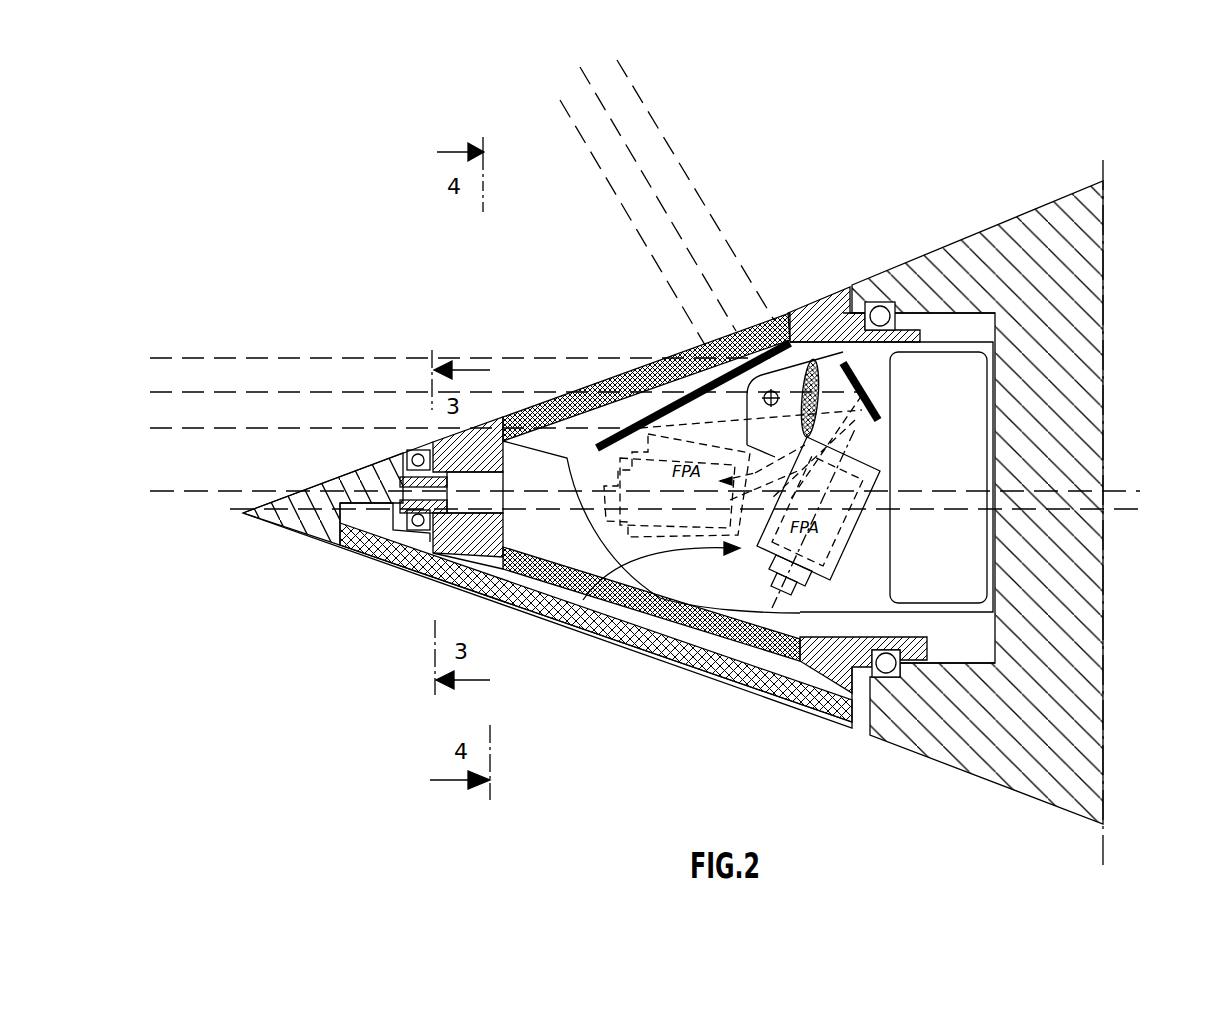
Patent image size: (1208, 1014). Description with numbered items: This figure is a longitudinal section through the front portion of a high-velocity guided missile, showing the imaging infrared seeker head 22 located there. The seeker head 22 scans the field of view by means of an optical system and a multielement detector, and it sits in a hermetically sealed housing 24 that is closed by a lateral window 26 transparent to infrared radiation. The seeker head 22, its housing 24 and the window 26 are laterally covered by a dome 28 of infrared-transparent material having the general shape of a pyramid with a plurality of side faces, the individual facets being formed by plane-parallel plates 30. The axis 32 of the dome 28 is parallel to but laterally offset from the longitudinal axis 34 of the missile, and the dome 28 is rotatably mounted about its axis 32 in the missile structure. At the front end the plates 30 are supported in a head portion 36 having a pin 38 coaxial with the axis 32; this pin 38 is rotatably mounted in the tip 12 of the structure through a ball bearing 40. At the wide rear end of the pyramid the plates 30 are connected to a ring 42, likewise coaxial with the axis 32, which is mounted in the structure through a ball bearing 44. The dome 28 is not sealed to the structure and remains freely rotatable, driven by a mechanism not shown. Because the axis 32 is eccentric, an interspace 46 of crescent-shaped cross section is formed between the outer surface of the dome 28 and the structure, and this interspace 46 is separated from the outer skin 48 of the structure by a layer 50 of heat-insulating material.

The tip 12 is at (297, 523).
The seeker head 22 is at (570, 612).
The housing 24 is at (803, 662).
The window 26 is at (640, 423).
The dome 28 is at (517, 413).
The plane-parallel plates 30 is at (633, 607).
The axis 32 is at (1063, 478).
The longitudinal axis 34 is at (1108, 500).
The head portion 36 is at (423, 553).
The pin 38 is at (400, 472).
The ball bearing 40 is at (420, 450).
The ring 42 is at (800, 315).
The ball bearing 44 is at (884, 665).
The interspace 46 is at (505, 580).
The outer skin 48 is at (718, 660).
The layer of heat-insulating material 50 is at (577, 607).